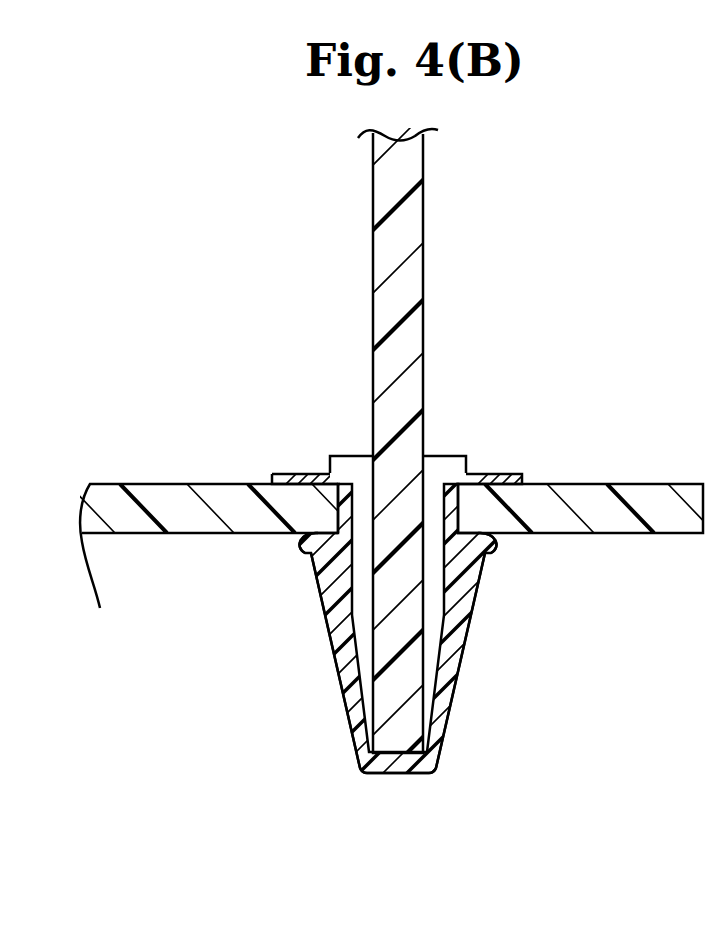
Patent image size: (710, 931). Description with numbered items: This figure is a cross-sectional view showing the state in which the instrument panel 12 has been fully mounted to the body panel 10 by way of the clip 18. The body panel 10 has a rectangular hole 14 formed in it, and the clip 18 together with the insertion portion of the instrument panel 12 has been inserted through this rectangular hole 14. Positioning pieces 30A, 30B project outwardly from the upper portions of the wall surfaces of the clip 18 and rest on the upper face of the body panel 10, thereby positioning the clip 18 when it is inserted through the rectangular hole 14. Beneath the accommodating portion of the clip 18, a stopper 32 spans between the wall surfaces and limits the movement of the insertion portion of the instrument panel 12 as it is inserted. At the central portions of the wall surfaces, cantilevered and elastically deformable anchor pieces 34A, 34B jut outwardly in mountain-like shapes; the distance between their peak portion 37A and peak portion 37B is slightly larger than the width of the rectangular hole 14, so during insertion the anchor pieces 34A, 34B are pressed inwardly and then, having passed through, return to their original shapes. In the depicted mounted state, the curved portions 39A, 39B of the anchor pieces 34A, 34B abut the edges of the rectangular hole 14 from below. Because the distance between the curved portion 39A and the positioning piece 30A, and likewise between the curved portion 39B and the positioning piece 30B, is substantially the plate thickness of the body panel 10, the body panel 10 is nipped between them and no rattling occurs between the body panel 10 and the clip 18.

The body panel 10 is at (632, 497).
The instrument panel 12 is at (426, 314).
The rectangular hole 14 is at (468, 471).
The clip 18 is at (466, 450).
The positioning piece 30A is at (293, 474).
The positioning piece 30B is at (500, 477).
The stopper 32 is at (383, 774).
The anchor piece 34A is at (336, 668).
The anchor piece 34B is at (463, 677).
The peak portion 37A is at (310, 553).
The peak portion 37B is at (487, 553).
The curved portion 39A is at (292, 540).
The curved portion 39B is at (494, 538).